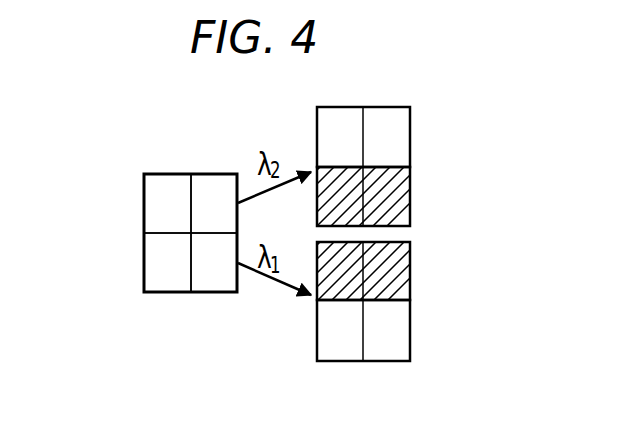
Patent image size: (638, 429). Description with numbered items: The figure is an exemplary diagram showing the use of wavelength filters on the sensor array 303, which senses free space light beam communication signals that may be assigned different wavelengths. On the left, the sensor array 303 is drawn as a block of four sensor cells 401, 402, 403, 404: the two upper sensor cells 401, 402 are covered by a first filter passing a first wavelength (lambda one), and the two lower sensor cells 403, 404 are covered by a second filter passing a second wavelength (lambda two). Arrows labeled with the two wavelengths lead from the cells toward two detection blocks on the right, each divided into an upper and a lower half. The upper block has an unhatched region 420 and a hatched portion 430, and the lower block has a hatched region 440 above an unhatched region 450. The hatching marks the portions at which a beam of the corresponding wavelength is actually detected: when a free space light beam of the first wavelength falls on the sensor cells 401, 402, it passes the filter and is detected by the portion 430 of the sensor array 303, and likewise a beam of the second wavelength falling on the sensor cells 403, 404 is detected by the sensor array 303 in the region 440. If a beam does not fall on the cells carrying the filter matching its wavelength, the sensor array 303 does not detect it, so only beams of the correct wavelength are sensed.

The sensor array 303 is at (136, 91).
The sensor cell 401 is at (144, 202).
The sensor cell 402 is at (219, 174).
The sensor cell 403 is at (144, 259).
The sensor cell 404 is at (213, 293).
The unconverted region of first output element 420 is at (411, 141).
The portion of the sensor array 430 is at (411, 200).
The converted (hatched) region receiving λ1 440 is at (411, 275).
The unconverted region of second output element 450 is at (411, 333).